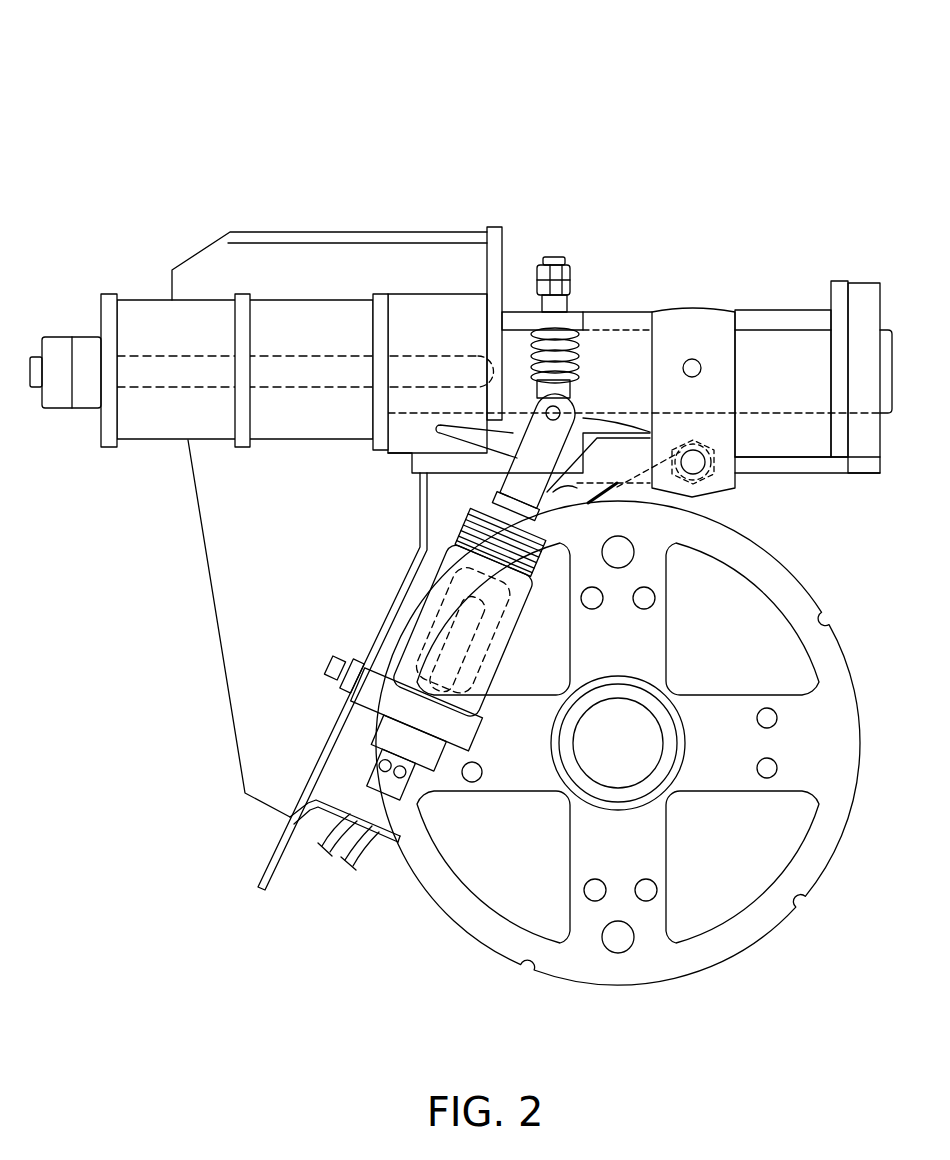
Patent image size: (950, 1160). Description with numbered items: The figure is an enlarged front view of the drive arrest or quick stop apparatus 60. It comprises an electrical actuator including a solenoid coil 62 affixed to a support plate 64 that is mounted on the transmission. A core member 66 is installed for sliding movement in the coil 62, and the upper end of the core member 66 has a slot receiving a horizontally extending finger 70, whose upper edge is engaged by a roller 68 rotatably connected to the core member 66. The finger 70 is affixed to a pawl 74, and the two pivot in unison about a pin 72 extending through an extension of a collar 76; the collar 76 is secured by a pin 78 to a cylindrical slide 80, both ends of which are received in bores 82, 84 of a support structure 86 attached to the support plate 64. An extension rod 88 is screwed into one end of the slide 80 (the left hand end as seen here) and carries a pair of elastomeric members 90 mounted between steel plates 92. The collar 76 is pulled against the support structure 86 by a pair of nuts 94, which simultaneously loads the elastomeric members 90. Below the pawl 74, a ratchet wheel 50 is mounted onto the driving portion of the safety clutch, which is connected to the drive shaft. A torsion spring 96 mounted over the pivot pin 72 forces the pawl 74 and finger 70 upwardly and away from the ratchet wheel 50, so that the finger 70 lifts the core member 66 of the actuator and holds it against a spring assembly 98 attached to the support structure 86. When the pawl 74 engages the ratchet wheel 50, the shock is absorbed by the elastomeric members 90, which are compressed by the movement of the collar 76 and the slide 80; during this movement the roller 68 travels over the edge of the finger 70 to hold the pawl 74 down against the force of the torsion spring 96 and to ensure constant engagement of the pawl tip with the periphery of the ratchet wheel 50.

The ratchet wheel 50 is at (818, 610).
The quick stop apparatus 60 is at (601, 112).
The solenoid coil 62 is at (485, 657).
The support plate 64 is at (228, 600).
The core member 66 is at (500, 488).
The roller 68 is at (576, 400).
The finger 70 is at (510, 432).
The pin 72 is at (705, 466).
The pawl 74 is at (547, 548).
The collar 76 is at (683, 305).
The pin 78 is at (700, 362).
The cylindrical slide 80 is at (797, 350).
The bore 82 is at (867, 330).
The bore 84 is at (430, 330).
The support structure 86 is at (860, 443).
The extension rod 88 is at (175, 365).
The elastomeric members 90 is at (220, 318).
The steel plates 92 is at (242, 428).
The nuts 94 is at (52, 402).
The torsion spring 96 is at (692, 497).
The spring assembly 98 is at (568, 330).